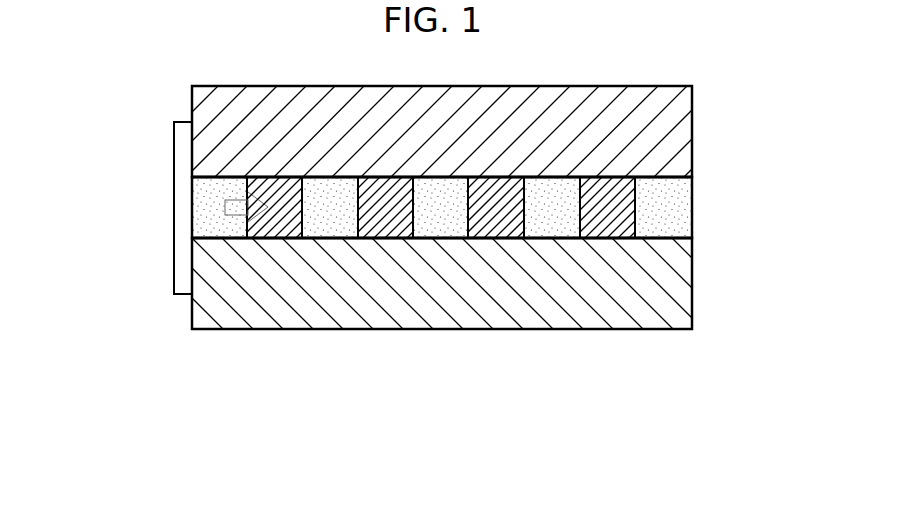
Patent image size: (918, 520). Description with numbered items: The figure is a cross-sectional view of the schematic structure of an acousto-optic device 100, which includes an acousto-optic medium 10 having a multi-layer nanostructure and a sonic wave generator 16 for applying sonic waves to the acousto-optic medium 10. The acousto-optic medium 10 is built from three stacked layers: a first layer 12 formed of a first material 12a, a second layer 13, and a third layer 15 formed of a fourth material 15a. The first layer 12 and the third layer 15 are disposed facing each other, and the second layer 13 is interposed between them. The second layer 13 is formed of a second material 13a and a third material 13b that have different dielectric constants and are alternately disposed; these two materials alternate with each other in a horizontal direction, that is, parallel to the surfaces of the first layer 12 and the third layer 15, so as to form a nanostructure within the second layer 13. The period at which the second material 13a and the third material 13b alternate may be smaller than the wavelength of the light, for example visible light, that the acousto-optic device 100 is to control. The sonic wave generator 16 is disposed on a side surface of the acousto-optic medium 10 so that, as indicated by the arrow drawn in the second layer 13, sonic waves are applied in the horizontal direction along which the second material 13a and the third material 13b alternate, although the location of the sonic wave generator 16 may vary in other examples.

The acousto-optic device 100 is at (98, 181).
The acousto-optic medium 10 is at (442, 336).
The first layer 12 is at (692, 281).
The first material 12a is at (458, 296).
The second layer 13 is at (779, 184).
The second material 13a is at (685, 195).
The third material 13b is at (625, 224).
The third layer 15 is at (692, 130).
The fourth material 15a is at (458, 144).
The sonic wave generator 16 is at (178, 212).